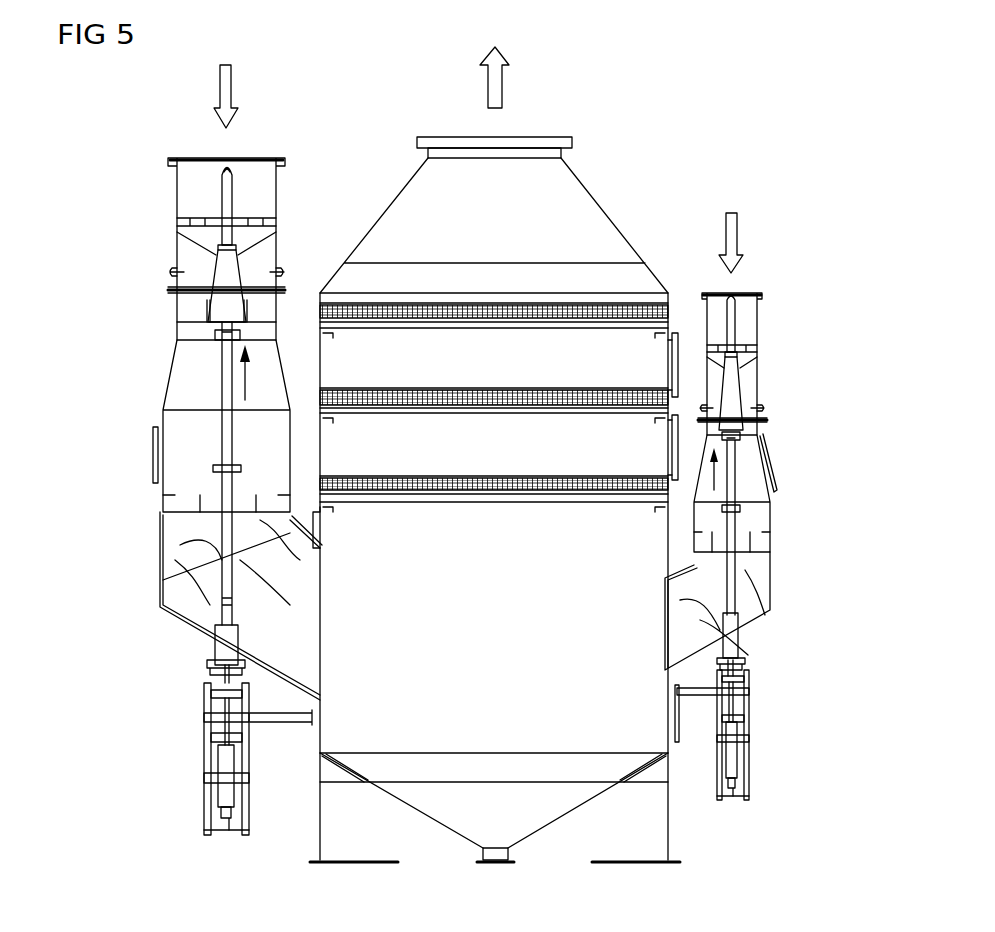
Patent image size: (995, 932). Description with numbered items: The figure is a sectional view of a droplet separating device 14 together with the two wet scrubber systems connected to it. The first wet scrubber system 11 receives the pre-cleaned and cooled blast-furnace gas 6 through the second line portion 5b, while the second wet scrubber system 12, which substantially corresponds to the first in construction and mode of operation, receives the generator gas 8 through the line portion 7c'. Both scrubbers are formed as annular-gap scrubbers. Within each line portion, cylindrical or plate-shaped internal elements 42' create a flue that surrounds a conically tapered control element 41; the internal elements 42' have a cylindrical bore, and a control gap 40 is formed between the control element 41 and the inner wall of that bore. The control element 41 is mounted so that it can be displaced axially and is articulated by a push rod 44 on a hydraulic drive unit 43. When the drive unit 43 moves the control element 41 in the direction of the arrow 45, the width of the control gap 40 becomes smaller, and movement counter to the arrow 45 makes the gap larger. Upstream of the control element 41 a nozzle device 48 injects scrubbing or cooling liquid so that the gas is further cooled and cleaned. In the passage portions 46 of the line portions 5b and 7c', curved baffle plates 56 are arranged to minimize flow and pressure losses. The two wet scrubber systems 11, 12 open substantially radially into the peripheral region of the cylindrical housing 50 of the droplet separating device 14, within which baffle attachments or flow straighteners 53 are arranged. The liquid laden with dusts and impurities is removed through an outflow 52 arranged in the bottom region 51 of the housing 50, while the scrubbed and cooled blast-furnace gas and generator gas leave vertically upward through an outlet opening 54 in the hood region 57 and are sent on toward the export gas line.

The second line portion 5b is at (177, 195).
The blast-furnace gas 6 is at (222, 86).
The line portion 7c' is at (758, 364).
The generator gas 8 is at (735, 236).
The first wet scrubber system 11 is at (118, 216).
The second wet scrubber system 12 is at (805, 295).
The droplet separating device 14 is at (628, 172).
The control gap 40 is at (208, 282).
The control element 41 is at (214, 335).
The internal elements 42' is at (472, 366).
The drive unit 43 is at (190, 758).
The push rod 44 is at (222, 440).
The arrow 45 is at (246, 398).
The passage portions 46 is at (176, 388).
The nozzle device 48 is at (280, 270).
The housing 50 is at (325, 740).
The bottom region 51 is at (445, 832).
The outflow 52 is at (496, 862).
The flow straighteners 53 is at (440, 305).
The outlet opening 54 is at (522, 137).
The curved baffle plates 56 is at (190, 546).
The hood region 57 is at (388, 200).